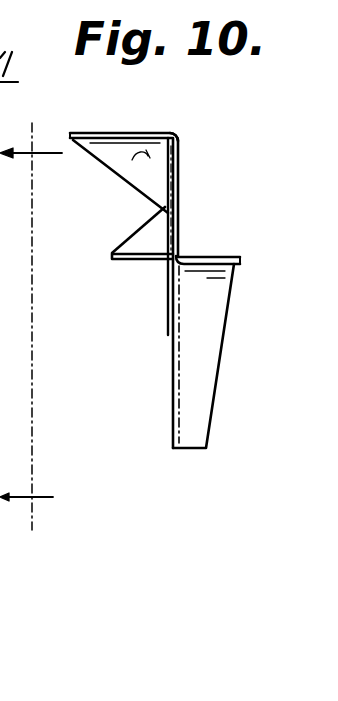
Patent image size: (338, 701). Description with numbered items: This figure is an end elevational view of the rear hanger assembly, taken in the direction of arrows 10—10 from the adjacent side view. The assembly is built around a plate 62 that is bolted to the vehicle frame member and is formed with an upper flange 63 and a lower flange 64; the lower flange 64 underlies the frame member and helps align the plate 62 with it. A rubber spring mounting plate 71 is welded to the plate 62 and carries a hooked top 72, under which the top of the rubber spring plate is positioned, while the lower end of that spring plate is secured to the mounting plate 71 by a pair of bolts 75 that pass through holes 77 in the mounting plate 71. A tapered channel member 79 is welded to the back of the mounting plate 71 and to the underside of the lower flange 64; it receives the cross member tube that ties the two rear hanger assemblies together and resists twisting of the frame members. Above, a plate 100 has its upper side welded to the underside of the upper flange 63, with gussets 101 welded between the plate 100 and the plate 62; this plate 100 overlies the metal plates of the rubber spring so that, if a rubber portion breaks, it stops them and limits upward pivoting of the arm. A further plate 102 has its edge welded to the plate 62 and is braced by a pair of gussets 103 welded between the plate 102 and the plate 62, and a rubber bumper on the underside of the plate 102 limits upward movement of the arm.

The arrows 10— 10 is at (38, 315).
The plate 62 is at (181, 199).
The upper flange 63 is at (152, 132).
The lower flange 64 is at (215, 257).
The rubber spring mounting plate 71 is at (163, 290).
The hooked top 72 is at (128, 168).
The bolts 75 is at (181, 142).
The holes 77 is at (168, 335).
The tapered channel member 79 is at (217, 330).
The plate 100 is at (133, 97).
The gussets 101 is at (99, 168).
The plate 102 is at (125, 262).
The gussets 103 is at (130, 226).